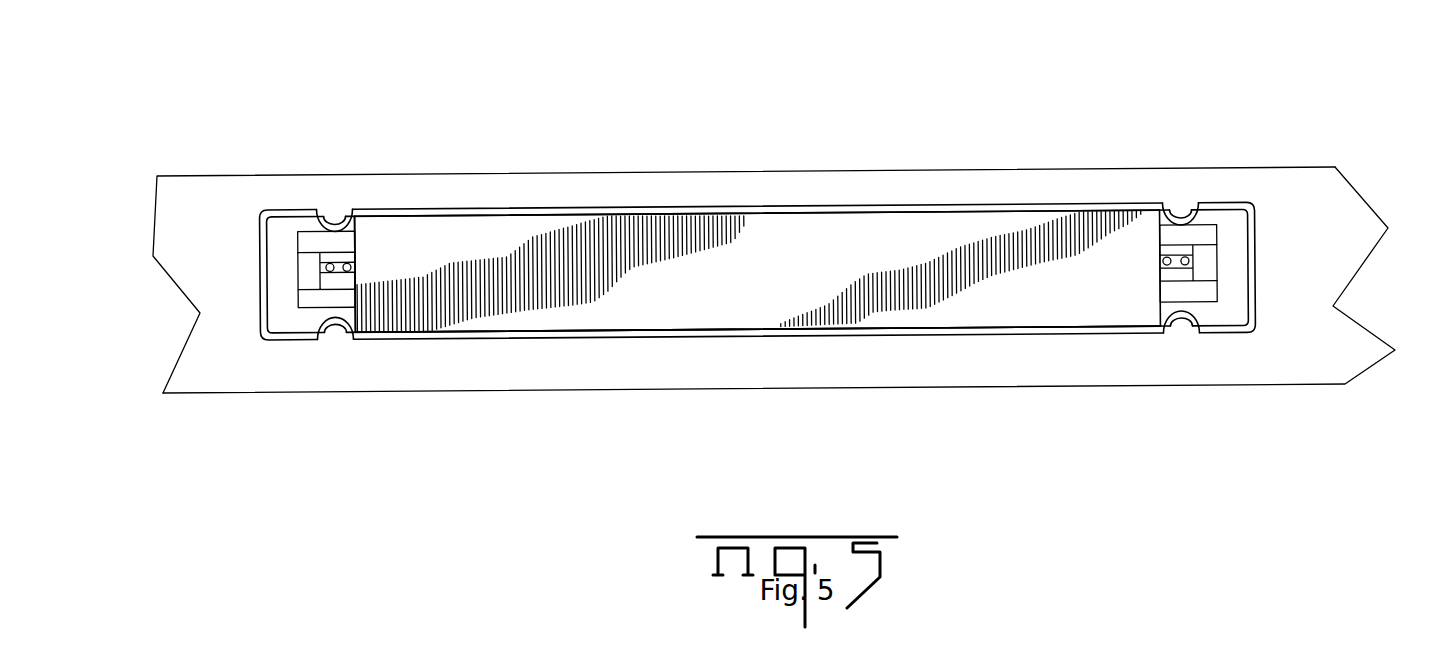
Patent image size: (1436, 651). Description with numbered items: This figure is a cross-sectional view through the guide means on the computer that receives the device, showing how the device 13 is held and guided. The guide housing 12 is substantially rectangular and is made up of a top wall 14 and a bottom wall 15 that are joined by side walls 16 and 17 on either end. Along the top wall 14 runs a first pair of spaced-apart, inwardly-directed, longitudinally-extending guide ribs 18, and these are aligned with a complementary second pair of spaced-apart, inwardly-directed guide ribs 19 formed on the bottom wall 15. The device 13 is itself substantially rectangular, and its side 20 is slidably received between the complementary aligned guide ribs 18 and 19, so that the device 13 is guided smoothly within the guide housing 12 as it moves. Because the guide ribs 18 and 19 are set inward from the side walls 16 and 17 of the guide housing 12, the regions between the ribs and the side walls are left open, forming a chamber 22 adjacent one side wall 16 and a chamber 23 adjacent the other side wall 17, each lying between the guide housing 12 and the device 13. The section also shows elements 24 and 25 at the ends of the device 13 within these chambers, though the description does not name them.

The guide housing 12 is at (922, 194).
The device 13 is at (944, 303).
The top wall 14 is at (722, 211).
The bottom wall 15 is at (700, 329).
The side wall 16 is at (262, 323).
The side wall 17 is at (1257, 302).
The guide ribs 18 is at (333, 223).
The guide ribs 19 is at (332, 327).
The side 20 is at (353, 318).
The chamber 22 is at (287, 323).
The chamber 23 is at (1235, 308).
The left bearing 24 is at (286, 264).
The right bearing 25 is at (1227, 255).